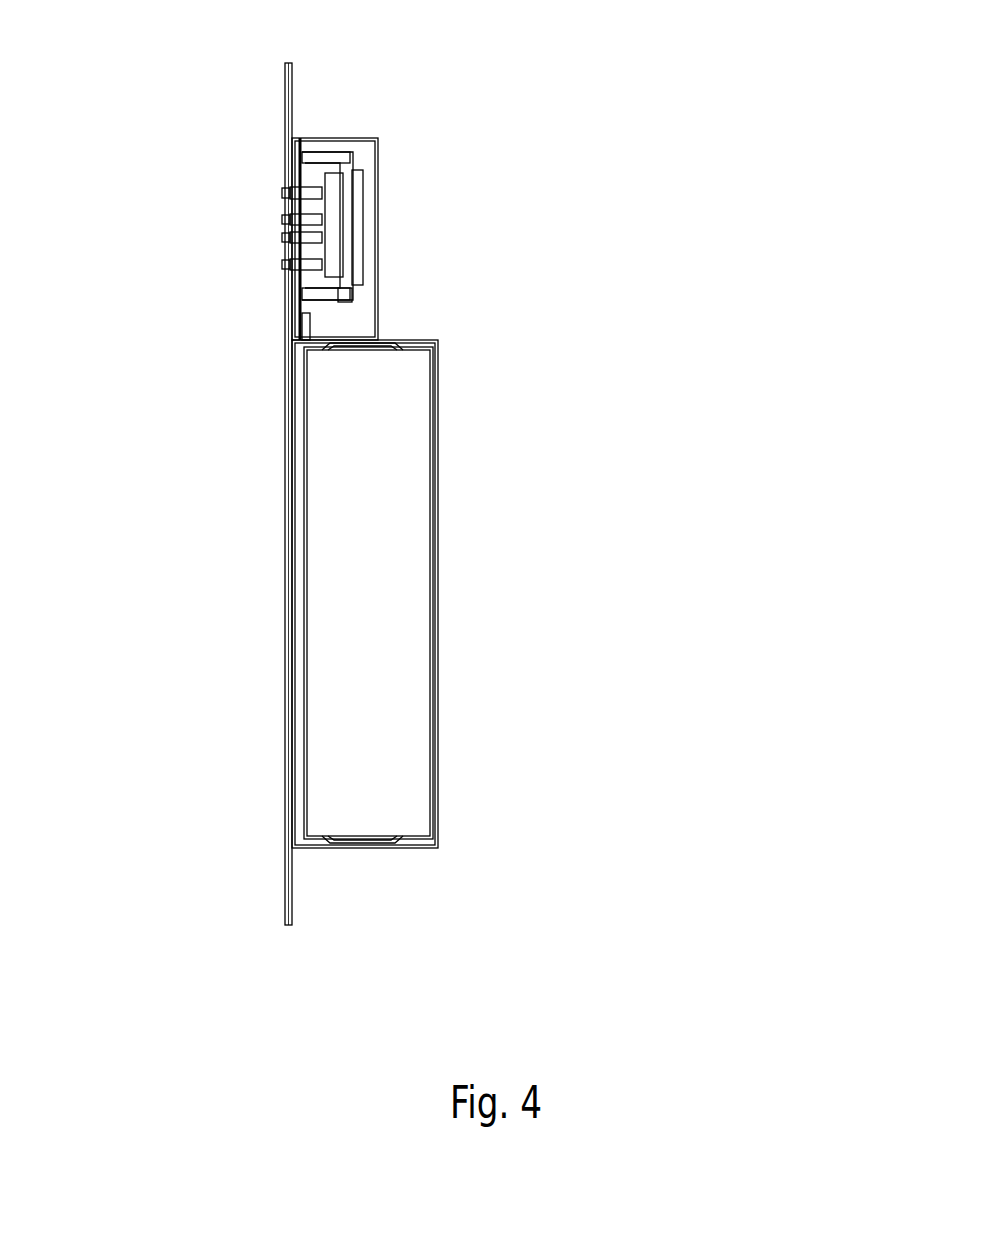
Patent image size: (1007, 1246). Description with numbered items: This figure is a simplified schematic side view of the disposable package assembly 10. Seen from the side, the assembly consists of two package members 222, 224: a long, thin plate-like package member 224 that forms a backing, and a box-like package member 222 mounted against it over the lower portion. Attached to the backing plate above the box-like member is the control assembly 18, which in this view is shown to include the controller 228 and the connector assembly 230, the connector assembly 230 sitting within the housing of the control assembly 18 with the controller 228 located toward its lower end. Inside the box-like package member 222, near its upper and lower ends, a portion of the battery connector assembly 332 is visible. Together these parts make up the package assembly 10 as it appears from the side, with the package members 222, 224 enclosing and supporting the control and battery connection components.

The disposable package assembly 10 is at (200, 296).
The control assembly 18 is at (283, 176).
The package member 222 is at (438, 378).
The package member 224 is at (294, 100).
The controller 228 is at (310, 318).
The connector assembly 230 is at (345, 218).
The battery connector assembly 332 is at (366, 348).